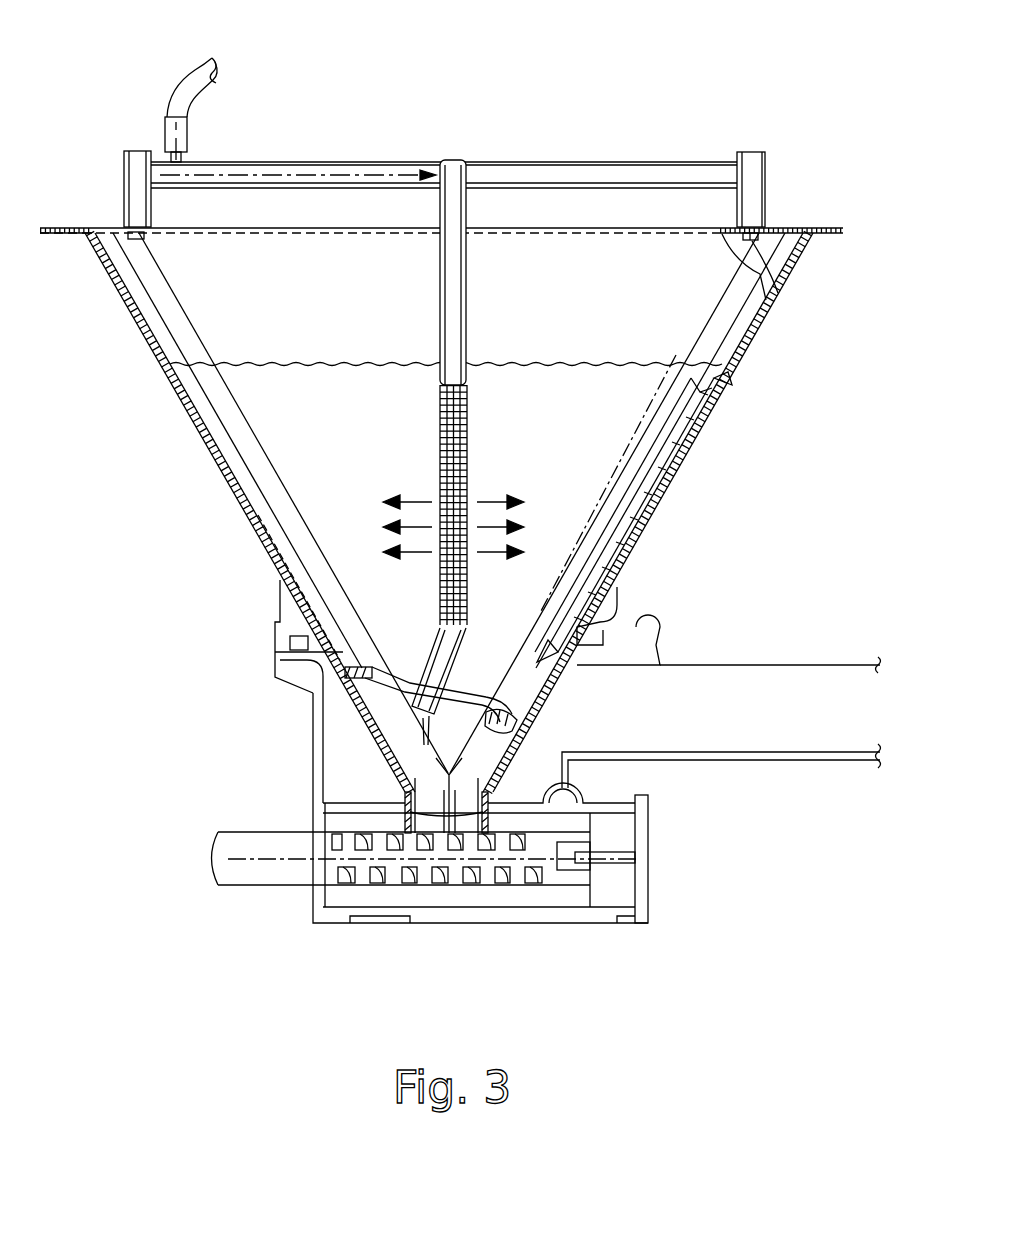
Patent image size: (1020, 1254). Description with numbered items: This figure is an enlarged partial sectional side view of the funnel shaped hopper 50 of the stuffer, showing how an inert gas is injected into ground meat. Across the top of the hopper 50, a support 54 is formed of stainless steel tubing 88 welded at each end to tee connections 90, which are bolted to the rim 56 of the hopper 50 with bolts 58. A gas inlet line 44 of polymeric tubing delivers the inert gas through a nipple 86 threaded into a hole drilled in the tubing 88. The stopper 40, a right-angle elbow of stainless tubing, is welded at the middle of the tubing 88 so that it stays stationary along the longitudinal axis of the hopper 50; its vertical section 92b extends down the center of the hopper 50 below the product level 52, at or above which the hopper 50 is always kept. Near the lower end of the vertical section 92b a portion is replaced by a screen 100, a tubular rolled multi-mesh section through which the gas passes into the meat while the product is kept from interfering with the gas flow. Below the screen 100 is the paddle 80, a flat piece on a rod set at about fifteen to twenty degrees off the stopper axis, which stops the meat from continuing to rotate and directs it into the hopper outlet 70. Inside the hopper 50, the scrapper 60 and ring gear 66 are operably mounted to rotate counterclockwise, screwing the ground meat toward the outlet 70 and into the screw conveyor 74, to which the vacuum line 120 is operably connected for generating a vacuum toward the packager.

The stopper 40 is at (386, 330).
The gas inlet line 44 is at (190, 88).
The hopper 50 is at (160, 363).
The product level 52 is at (618, 355).
The support 54 is at (426, 140).
The rim 56 is at (832, 236).
The bolts 58 is at (772, 268).
The scrapper 60 is at (650, 473).
The ring gear 66 is at (520, 712).
The hopper outlet 70 is at (450, 808).
The screw conveyor 74 is at (340, 848).
The paddle 80 is at (470, 665).
The nipple 86 is at (183, 160).
The tubing 88 is at (683, 162).
The tee connections 90 is at (135, 150).
The vertical section 92b is at (466, 265).
The screen 100 is at (463, 477).
The vacuum line 120 is at (722, 752).